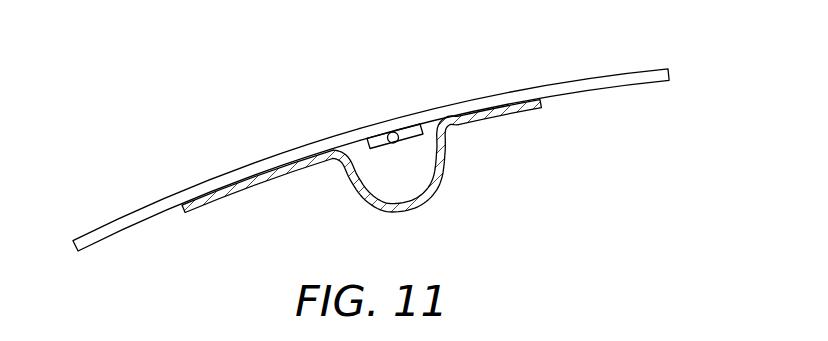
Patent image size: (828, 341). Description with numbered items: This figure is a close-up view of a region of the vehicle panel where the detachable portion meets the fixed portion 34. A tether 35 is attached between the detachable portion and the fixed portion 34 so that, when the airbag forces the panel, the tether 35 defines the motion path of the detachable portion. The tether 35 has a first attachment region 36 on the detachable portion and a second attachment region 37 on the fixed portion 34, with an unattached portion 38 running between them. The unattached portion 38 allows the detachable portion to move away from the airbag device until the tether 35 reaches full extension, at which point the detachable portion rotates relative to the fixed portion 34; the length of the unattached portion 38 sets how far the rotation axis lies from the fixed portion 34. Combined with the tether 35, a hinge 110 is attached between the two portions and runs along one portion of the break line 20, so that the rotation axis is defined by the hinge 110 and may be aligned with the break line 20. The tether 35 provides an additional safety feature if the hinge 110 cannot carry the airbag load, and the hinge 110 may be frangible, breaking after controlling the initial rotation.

The break line 20 is at (393, 132).
The fixed portion 34 is at (371, 143).
The tether 35 is at (363, 155).
The first attachment region 36 is at (267, 145).
The second attachment region 37 is at (438, 91).
The unattached portion 38 is at (446, 168).
The hinge 110 is at (393, 143).